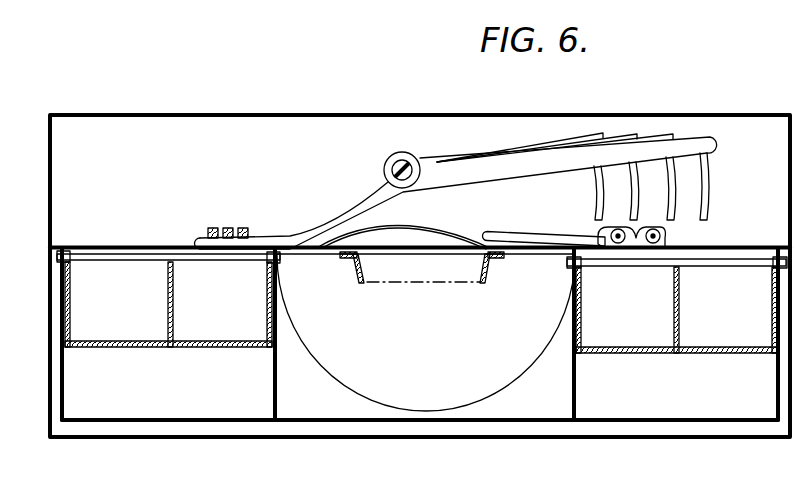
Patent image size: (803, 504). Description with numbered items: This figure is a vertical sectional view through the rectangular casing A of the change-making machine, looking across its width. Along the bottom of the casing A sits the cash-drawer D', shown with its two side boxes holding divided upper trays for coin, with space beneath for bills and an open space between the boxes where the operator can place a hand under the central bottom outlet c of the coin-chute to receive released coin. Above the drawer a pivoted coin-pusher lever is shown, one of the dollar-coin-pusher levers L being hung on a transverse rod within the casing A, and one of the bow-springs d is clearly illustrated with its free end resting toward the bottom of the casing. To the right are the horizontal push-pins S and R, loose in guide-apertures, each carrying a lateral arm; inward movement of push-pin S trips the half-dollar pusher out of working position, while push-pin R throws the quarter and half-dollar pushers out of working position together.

The casing A is at (338, 437).
The cash-drawer D' is at (426, 333).
The central bottom outlet c is at (388, 264).
The push-pin S is at (617, 244).
The push-pin R is at (667, 269).
The bow-spring d is at (439, 233).
The dollar-coin-pusher lever L is at (243, 228).